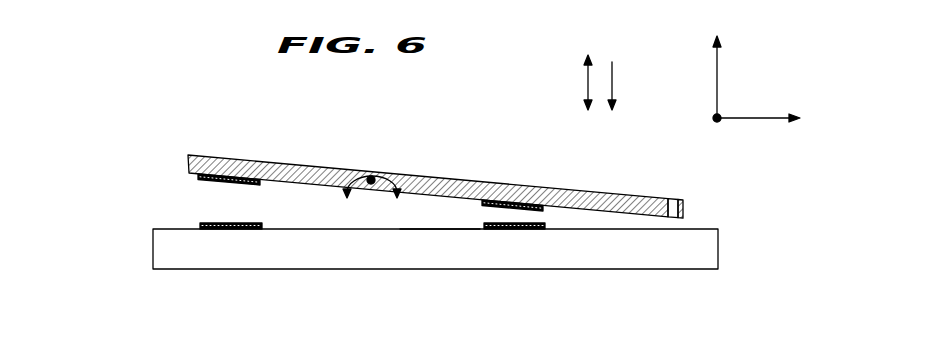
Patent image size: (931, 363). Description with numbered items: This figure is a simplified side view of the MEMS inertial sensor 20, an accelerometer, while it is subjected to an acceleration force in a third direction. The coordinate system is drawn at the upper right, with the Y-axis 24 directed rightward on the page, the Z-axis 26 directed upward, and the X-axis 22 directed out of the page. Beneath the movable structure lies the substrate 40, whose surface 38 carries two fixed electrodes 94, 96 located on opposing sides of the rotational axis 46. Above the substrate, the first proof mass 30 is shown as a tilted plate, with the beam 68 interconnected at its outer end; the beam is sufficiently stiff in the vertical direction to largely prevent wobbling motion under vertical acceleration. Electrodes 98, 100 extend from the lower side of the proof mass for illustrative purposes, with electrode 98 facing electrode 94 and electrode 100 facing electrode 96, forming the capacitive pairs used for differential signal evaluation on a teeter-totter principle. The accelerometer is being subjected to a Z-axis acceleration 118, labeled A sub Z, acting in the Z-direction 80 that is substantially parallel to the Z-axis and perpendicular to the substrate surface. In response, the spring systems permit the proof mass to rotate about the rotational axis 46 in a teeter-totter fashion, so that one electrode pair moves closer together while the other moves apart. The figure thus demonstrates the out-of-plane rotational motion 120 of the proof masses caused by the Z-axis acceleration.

The MEMS inertial sensor 20 is at (794, 308).
The substrate 40 is at (153, 240).
The electrode 96 is at (262, 227).
The electrode 94 is at (546, 227).
The surface 38 is at (432, 229).
The out-of-plane rotational motion 120 is at (208, 96).
The first proof mass 30 is at (190, 154).
The beam 68 is at (683, 211).
The electrode 100 is at (278, 178).
The electrode 98 is at (548, 208).
The rotational axis 46 is at (378, 176).
The Z-direction 80 is at (586, 87).
The Z-axis acceleration 118 is at (613, 62).
The X-axis 22 is at (720, 122).
The Z-axis 26 is at (718, 77).
The Y-axis 24 is at (763, 117).